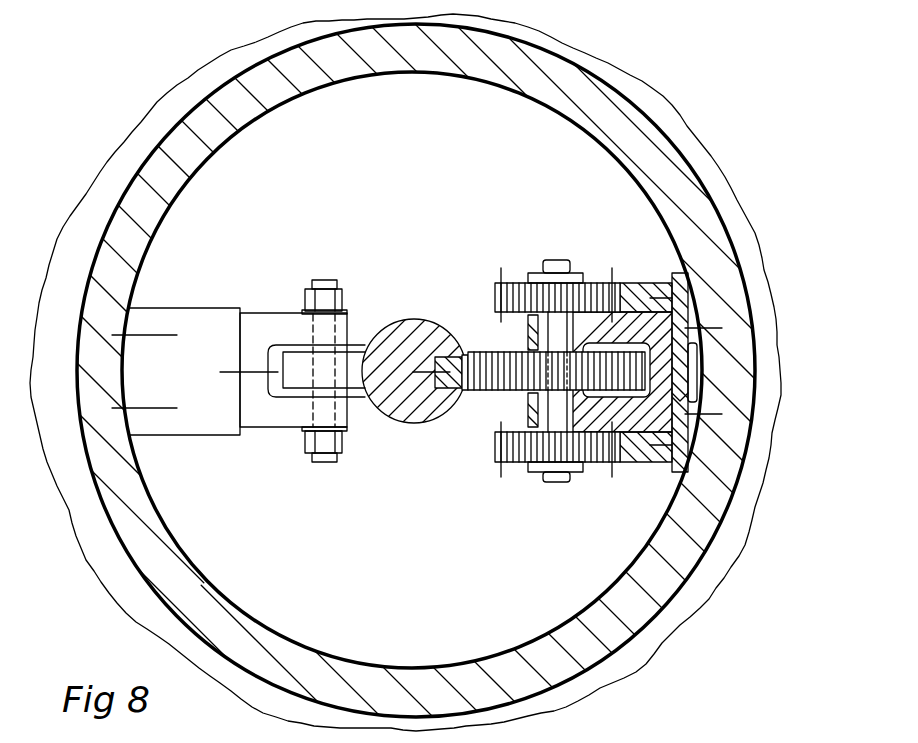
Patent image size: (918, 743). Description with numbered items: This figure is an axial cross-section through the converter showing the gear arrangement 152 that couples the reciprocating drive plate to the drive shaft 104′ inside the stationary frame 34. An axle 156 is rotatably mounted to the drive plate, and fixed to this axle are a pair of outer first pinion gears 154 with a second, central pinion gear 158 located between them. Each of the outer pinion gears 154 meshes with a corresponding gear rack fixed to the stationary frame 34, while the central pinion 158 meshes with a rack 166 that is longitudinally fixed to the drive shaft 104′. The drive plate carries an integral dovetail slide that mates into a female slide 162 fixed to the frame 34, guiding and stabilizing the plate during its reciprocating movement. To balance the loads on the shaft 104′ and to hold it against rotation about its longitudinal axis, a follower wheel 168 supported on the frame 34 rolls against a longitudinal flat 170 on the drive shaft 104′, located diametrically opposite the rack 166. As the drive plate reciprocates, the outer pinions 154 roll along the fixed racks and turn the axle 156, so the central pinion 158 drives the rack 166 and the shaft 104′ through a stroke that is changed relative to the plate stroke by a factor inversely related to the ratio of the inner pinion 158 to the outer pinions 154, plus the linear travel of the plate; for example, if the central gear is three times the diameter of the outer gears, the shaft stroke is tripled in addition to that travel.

The gear arrangement 152 is at (445, 230).
The frame 34 is at (186, 326).
The follower wheel 168 is at (292, 358).
The longitudinal flat 170 is at (357, 366).
The drive shaft 104′ is at (395, 428).
The rack 166 is at (446, 389).
The second pinion gear 158 is at (503, 395).
The axle 156 is at (557, 483).
The first pinion gears 154 is at (605, 457).
The female slide 162 is at (703, 385).